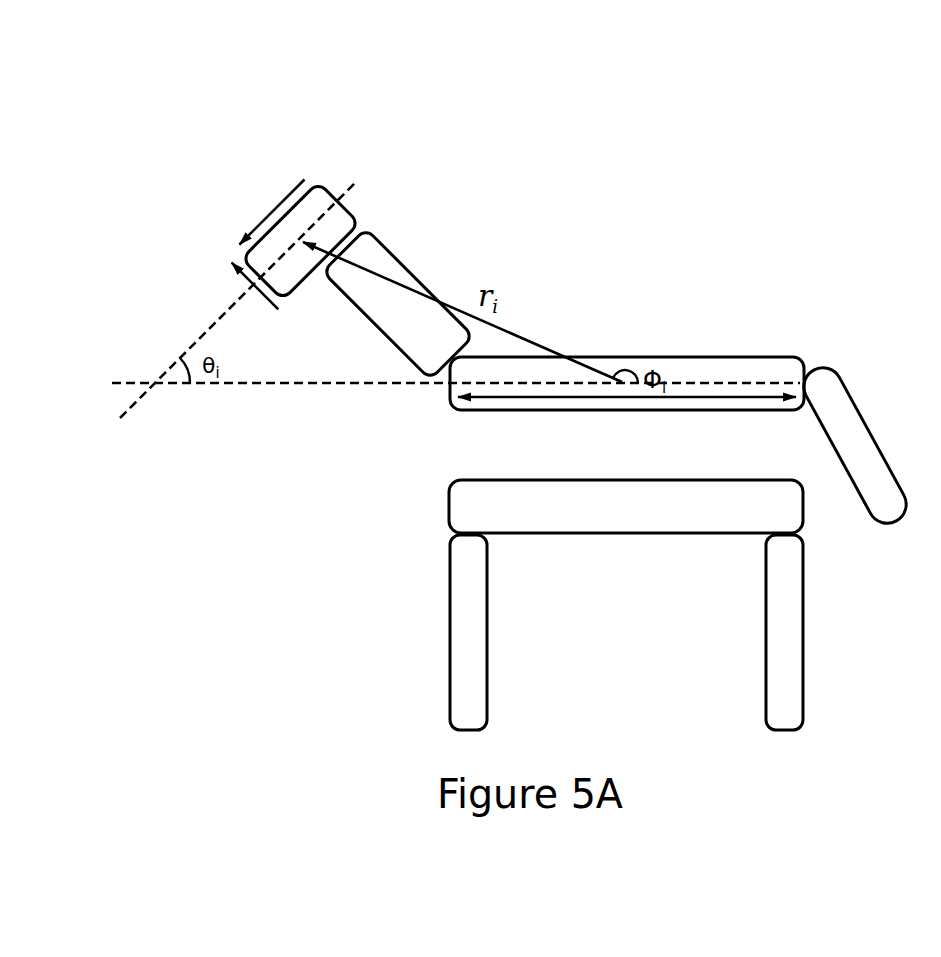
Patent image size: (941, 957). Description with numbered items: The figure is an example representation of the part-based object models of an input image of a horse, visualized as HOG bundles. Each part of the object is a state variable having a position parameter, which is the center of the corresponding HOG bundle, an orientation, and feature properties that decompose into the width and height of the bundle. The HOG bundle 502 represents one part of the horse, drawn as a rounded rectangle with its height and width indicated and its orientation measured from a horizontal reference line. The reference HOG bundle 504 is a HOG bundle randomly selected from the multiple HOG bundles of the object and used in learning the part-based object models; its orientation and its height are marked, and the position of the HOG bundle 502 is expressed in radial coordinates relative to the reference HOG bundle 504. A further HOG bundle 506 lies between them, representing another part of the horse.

The HOG bundle 502 is at (313, 172).
The reference HOG bundle 504 is at (675, 343).
The upper body segment 506 is at (372, 266).